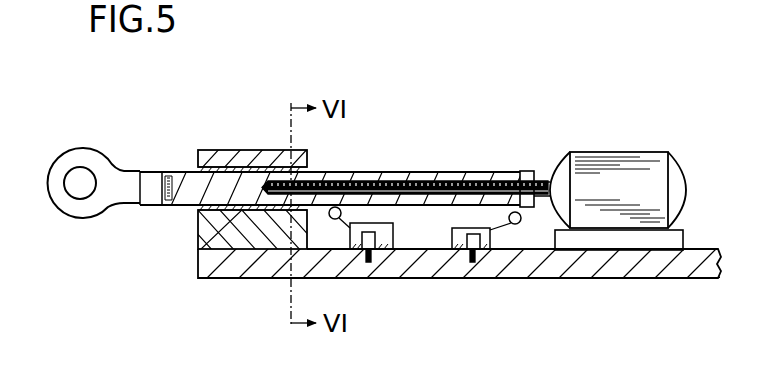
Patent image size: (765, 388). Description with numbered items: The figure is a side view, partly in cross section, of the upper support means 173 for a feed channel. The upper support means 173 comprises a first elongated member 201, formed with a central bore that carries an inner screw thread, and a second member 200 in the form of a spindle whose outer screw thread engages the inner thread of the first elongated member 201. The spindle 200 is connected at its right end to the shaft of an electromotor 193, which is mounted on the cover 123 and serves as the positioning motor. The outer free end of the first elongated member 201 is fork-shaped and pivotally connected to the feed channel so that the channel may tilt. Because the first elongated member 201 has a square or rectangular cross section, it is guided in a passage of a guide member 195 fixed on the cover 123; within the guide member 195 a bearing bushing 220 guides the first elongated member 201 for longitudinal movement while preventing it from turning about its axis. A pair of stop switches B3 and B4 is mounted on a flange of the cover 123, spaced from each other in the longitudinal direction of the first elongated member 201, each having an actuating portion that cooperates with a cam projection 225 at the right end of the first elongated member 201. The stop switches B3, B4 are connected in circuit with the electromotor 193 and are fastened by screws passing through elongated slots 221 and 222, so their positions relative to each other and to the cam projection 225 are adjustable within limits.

The upper support means 173 is at (72, 141).
The guide member 195 is at (233, 147).
The bearing bushing 220 is at (225, 211).
The first elongated member 201 is at (395, 172).
The second member 200 is at (539, 176).
The electromotor 193 is at (617, 152).
The cover 123 is at (660, 281).
The cam projection 225 is at (422, 221).
The stop switch B3 is at (350, 229).
The stop switch B4 is at (490, 231).
The elongated slot 221 is at (373, 259).
The elongated slot 222 is at (475, 259).